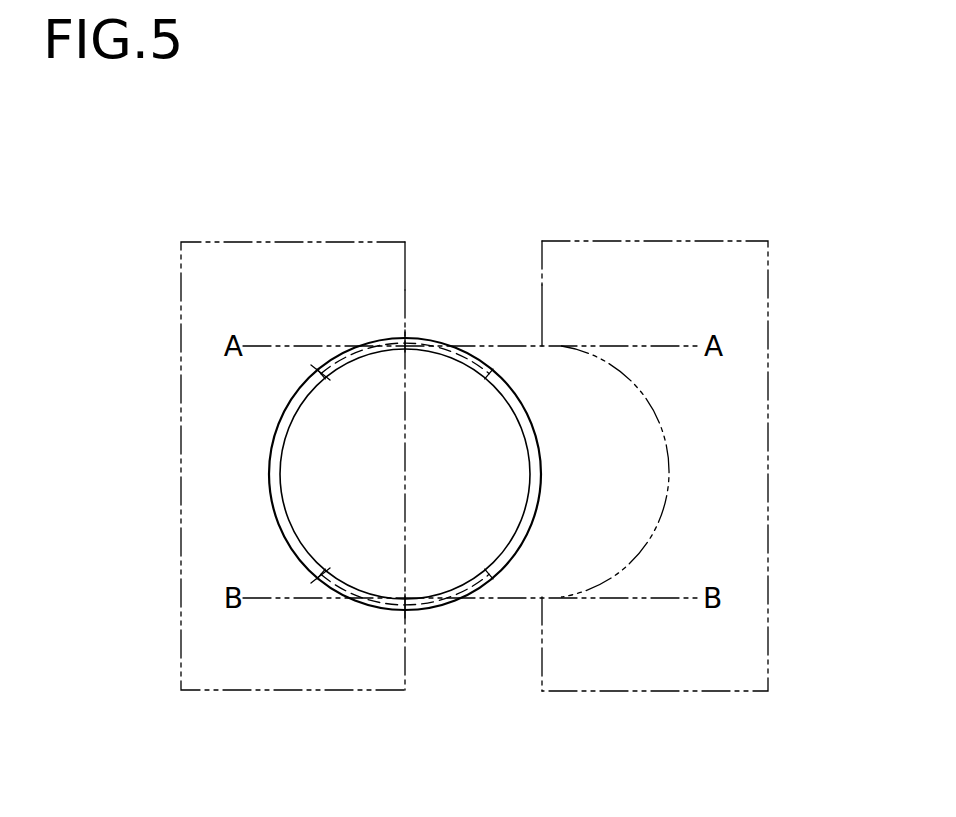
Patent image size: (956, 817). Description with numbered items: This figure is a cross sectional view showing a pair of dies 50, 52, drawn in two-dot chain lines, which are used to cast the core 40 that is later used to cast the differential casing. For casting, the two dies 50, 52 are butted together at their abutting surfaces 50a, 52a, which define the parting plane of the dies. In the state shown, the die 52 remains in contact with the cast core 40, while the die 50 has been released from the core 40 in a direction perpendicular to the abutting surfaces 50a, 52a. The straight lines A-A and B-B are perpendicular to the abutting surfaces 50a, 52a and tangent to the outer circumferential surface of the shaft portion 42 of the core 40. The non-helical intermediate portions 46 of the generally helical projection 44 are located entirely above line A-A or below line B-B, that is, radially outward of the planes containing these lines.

The die 52 is at (228, 250).
The abutting surface 52a is at (405, 288).
The die 50 is at (738, 251).
The abutting surface 50a is at (542, 285).
The core 40 is at (448, 643).
The generally helical projection 44 is at (535, 417).
The shaft portion 42 is at (497, 478).
The non-helical intermediate portions 46 is at (320, 370).